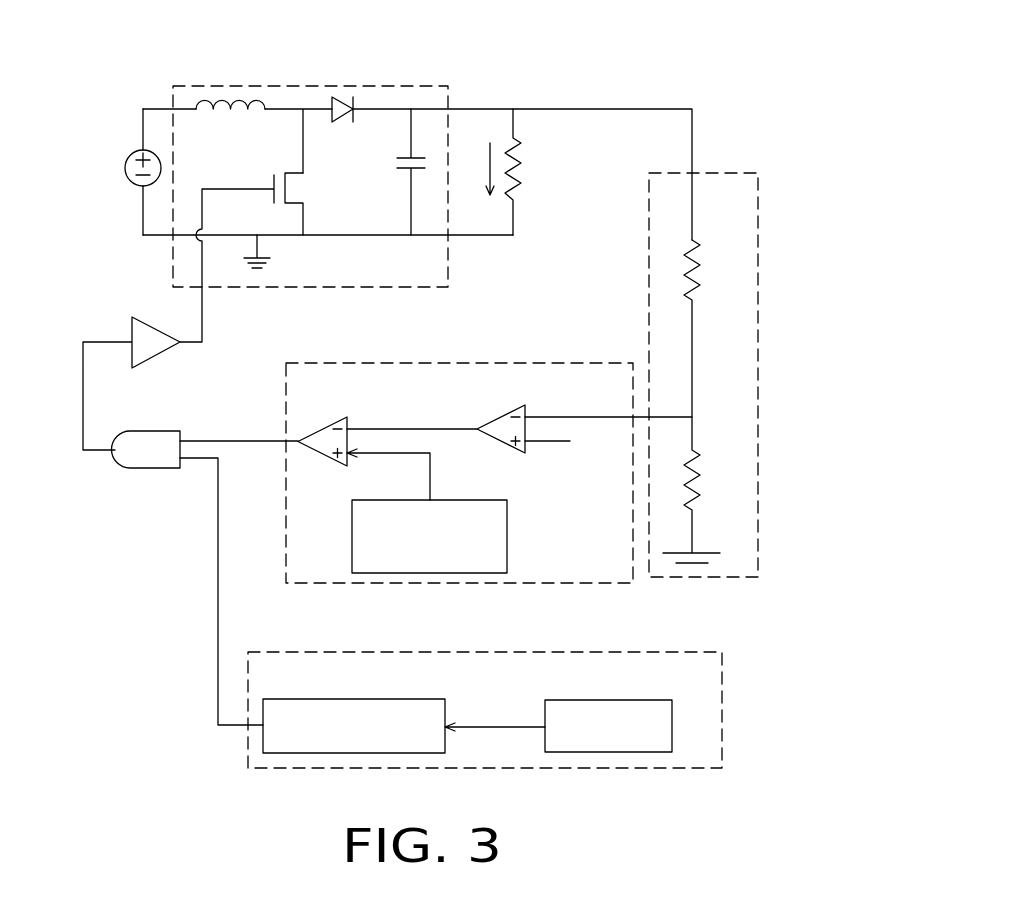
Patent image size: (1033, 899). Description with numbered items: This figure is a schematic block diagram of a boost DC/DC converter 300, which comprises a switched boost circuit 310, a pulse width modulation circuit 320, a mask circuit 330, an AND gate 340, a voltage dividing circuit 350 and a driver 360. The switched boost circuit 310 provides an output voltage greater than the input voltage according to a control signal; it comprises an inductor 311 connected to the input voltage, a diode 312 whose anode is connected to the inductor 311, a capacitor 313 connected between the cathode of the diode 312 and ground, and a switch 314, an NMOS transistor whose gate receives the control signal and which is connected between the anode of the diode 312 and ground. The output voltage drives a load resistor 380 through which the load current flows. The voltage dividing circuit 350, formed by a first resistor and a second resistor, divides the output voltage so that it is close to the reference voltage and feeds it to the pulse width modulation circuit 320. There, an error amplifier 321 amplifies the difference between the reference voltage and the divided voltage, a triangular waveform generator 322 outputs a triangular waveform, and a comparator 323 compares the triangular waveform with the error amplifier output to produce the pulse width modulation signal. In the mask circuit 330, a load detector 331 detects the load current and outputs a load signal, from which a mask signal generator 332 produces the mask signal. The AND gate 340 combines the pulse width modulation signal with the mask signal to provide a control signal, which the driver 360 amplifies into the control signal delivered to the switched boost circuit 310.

The boost DC/DC converter 300 is at (734, 62).
The switched boost circuit 310 is at (370, 80).
The inductor 311 is at (230, 98).
The diode 312 is at (344, 90).
The capacitor 313 is at (388, 163).
The switch 314 is at (305, 188).
The pulse width modulation circuit 320 is at (473, 362).
The error amplifier 321 is at (497, 412).
The triangular waveform generator 322 is at (480, 500).
The comparator 323 is at (328, 418).
The mask circuit 330 is at (560, 652).
The load detector 331 is at (612, 700).
The mask signal generator 332 is at (365, 698).
The AND gate 340 is at (148, 468).
The voltage dividing circuit 350 is at (727, 170).
The driver 360 is at (157, 357).
The load resistor 380 is at (528, 175).